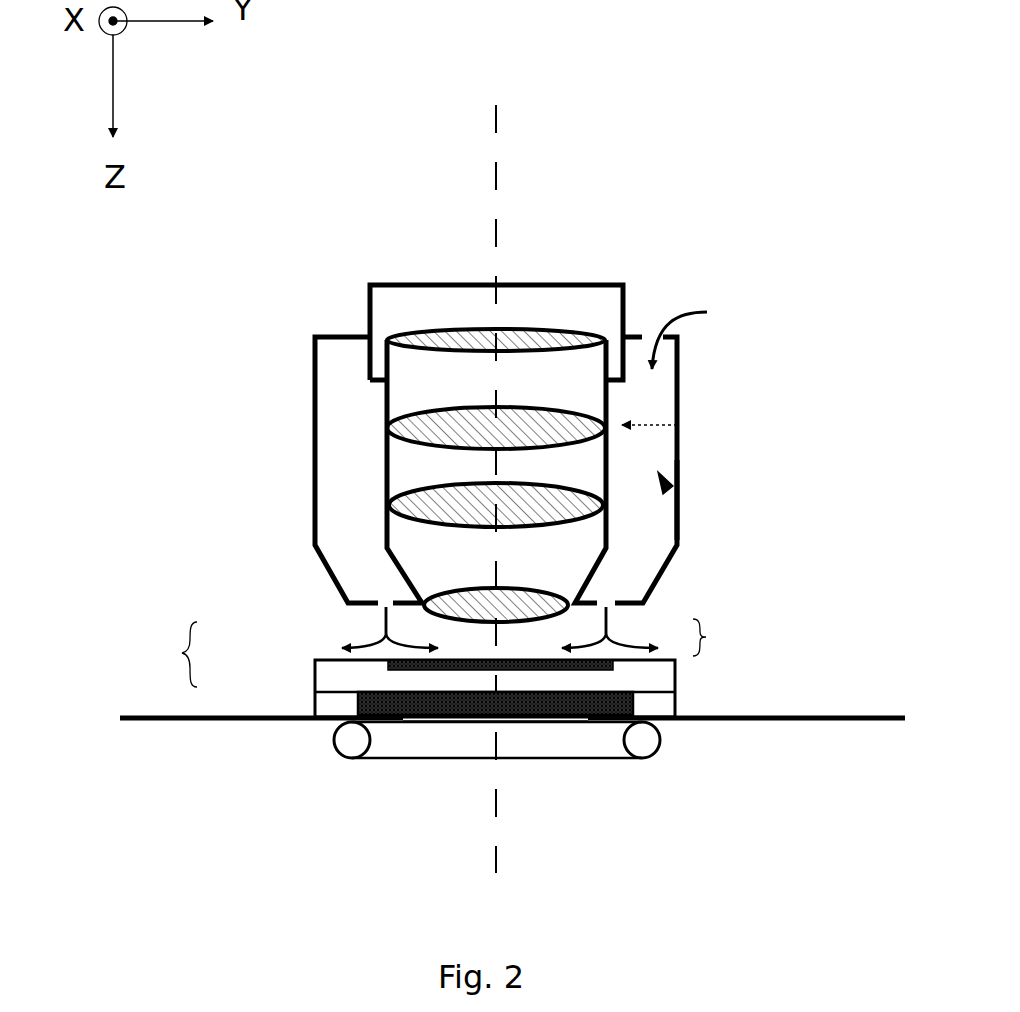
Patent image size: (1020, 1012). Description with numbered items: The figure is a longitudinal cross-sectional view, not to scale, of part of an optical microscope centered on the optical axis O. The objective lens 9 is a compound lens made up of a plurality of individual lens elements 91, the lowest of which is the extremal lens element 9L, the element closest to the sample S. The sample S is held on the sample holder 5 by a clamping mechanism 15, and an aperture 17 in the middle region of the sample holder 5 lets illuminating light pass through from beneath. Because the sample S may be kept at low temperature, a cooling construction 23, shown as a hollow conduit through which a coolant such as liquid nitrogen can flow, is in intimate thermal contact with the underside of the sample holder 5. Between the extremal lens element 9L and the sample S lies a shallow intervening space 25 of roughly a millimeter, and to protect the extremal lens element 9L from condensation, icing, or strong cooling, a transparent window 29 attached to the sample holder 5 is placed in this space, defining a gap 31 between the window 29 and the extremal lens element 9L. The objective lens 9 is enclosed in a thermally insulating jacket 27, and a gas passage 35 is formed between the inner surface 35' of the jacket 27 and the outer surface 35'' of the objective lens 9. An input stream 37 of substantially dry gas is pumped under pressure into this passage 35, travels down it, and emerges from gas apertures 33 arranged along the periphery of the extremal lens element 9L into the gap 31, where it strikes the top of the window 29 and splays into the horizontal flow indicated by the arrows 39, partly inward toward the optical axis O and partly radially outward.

The optical axis O is at (497, 120).
The objective lens 9 is at (368, 302).
The lens elements 91 is at (420, 352).
The extremal lens element 9L is at (462, 598).
The gas passage 35 is at (427, 470).
The outer surface of the objective lens 35'' is at (723, 449).
The inner surface of the jacket 35' is at (738, 490).
The thermally insulating jacket 27 is at (680, 510).
The input stream 37 is at (672, 312).
The gas apertures 33 is at (384, 602).
The arrows indicating splayed flow 39 is at (637, 638).
The gap 31 is at (723, 637).
The intervening space 25 is at (165, 654).
The clamping mechanism 15 is at (333, 687).
The transparent window 29 is at (523, 663).
The sample S is at (422, 702).
The aperture 17 is at (457, 717).
The sample holder 5 is at (818, 722).
The cooling construction 23 is at (645, 740).